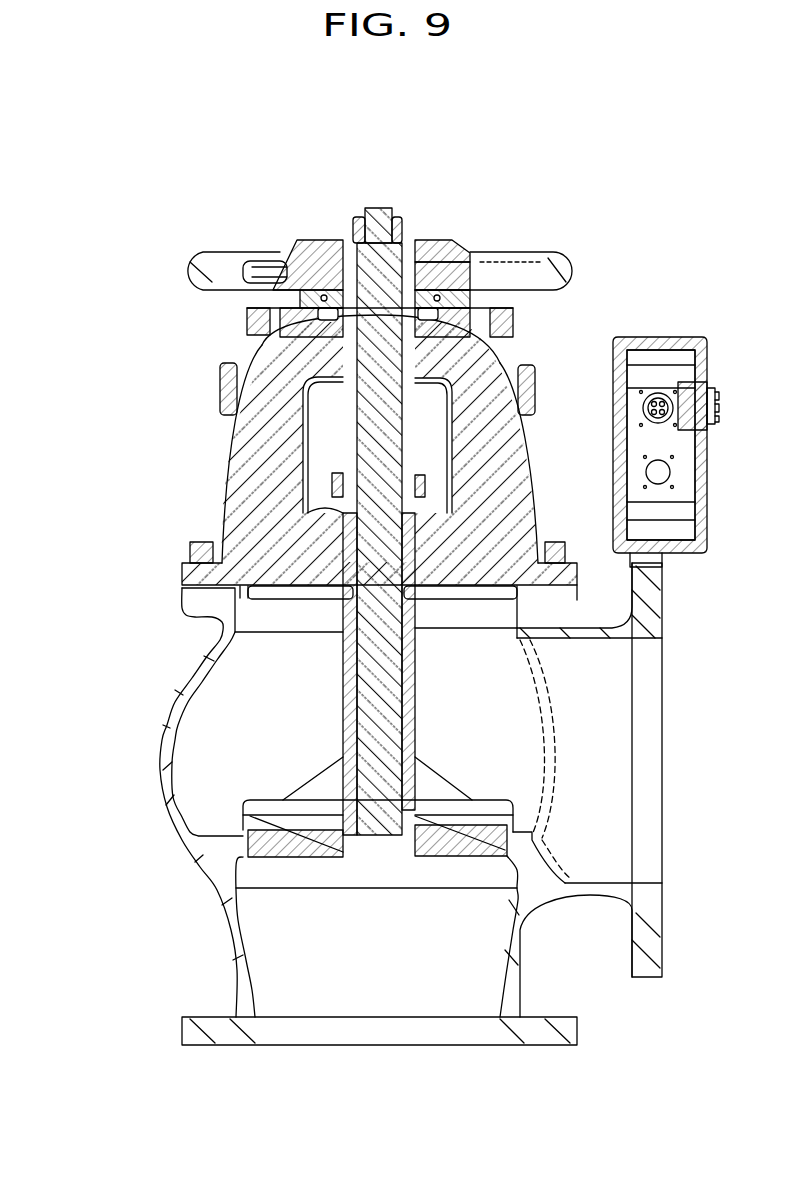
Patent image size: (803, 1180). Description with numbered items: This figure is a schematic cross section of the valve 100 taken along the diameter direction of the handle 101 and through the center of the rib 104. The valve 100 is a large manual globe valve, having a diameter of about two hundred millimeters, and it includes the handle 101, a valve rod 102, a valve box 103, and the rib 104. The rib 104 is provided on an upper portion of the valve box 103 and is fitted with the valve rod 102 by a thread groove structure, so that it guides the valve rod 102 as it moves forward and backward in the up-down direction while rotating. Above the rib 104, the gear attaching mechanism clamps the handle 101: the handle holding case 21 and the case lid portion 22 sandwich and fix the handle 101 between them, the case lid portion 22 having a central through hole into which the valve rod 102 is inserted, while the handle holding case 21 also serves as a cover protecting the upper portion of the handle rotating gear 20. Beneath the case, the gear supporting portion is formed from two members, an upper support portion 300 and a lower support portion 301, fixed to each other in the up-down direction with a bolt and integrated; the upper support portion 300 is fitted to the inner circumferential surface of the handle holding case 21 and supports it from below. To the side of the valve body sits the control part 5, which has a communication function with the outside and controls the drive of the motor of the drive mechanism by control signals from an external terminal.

The control part 5 is at (668, 337).
The handle rotating gear 20 is at (247, 320).
The handle holding case 21 is at (273, 253).
The case lid portion 22 is at (452, 247).
The valve 100 is at (155, 648).
The handle 101 is at (202, 258).
The valve rod 102 is at (373, 430).
The valve box 103 is at (158, 758).
The rib 104 is at (250, 482).
The upper support portion 300 is at (303, 237).
The lower support portion 301 is at (415, 240).